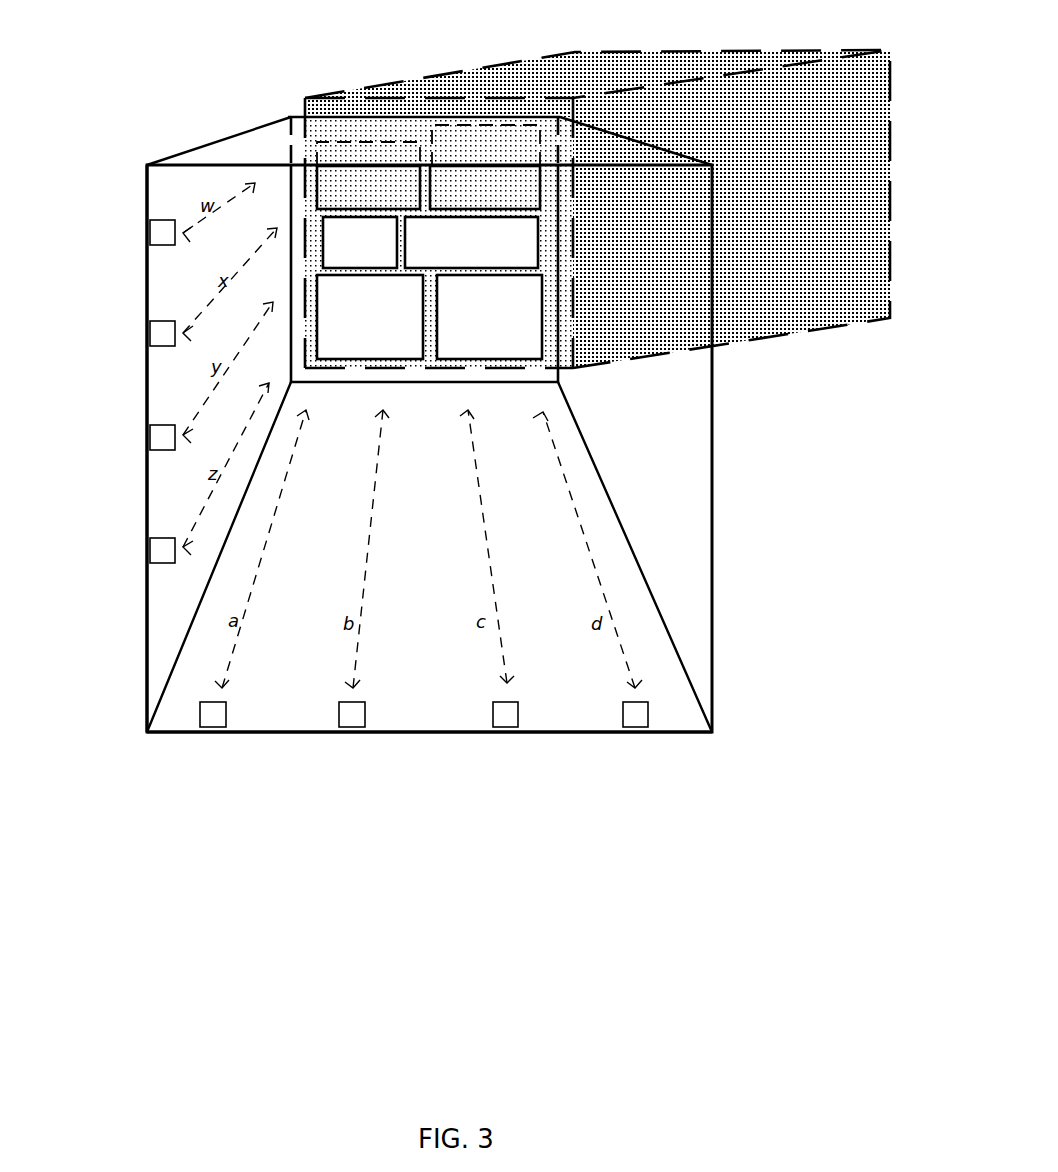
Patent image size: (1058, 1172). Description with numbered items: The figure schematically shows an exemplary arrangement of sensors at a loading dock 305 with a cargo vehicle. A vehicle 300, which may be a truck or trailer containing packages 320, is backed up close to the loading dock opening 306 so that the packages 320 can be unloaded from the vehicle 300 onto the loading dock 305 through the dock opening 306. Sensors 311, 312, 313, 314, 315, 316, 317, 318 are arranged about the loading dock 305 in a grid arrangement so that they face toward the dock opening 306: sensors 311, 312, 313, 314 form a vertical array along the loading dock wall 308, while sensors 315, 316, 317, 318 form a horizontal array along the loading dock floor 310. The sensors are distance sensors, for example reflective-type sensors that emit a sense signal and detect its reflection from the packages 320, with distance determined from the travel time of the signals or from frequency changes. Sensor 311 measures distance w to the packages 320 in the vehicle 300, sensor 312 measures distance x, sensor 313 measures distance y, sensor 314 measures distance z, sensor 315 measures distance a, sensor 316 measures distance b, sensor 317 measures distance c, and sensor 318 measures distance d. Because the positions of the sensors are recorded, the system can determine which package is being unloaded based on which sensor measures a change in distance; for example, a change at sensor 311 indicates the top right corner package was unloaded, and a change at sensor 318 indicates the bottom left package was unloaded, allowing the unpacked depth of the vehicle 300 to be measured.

The vehicle 300 is at (793, 333).
The loading dock 305 is at (713, 495).
The loading dock opening 306 is at (560, 340).
The loading dock wall 308 is at (165, 193).
The loading dock floor 310 is at (177, 715).
The sensor 311 is at (163, 237).
The sensor 312 is at (163, 335).
The sensor 313 is at (163, 438).
The sensor 314 is at (163, 552).
The sensor 315 is at (212, 717).
The sensor 316 is at (352, 717).
The sensor 317 is at (507, 717).
The sensor 318 is at (637, 717).
The packages 320 is at (429, 242).